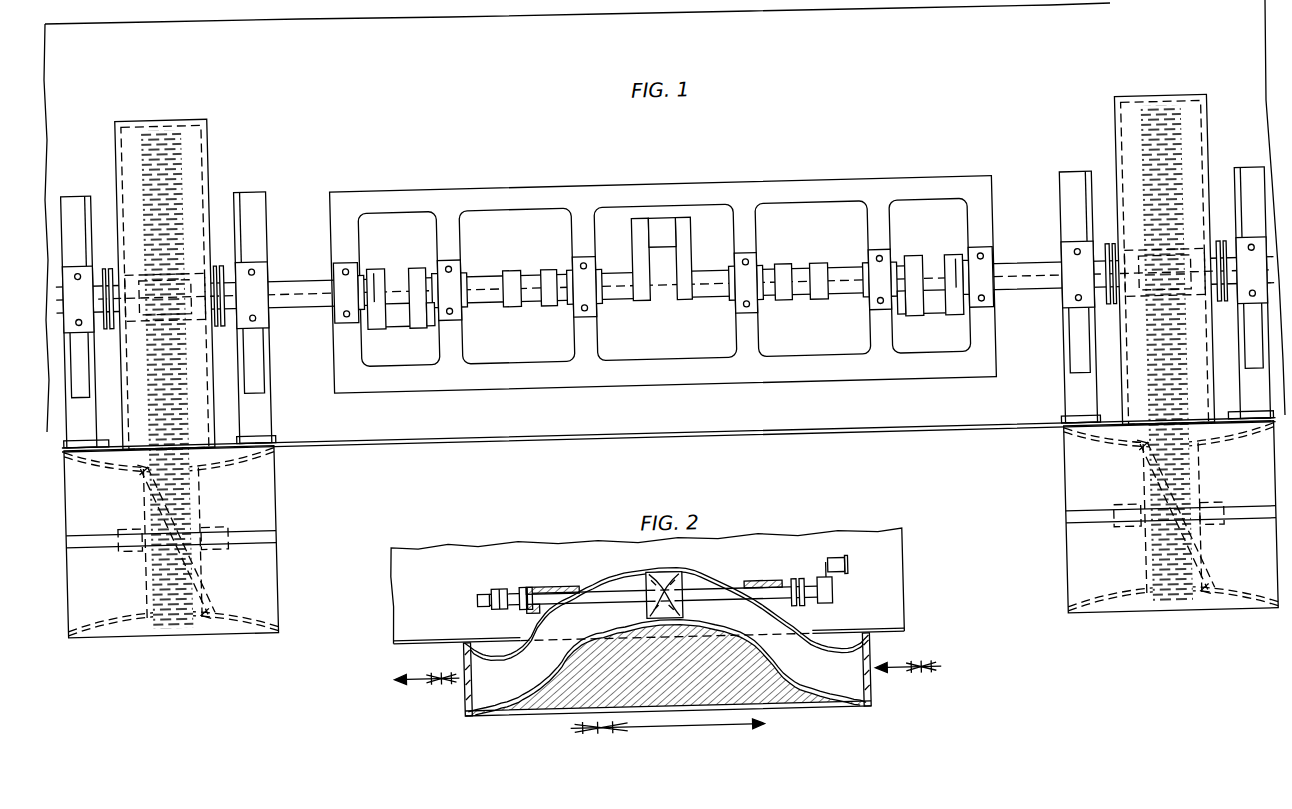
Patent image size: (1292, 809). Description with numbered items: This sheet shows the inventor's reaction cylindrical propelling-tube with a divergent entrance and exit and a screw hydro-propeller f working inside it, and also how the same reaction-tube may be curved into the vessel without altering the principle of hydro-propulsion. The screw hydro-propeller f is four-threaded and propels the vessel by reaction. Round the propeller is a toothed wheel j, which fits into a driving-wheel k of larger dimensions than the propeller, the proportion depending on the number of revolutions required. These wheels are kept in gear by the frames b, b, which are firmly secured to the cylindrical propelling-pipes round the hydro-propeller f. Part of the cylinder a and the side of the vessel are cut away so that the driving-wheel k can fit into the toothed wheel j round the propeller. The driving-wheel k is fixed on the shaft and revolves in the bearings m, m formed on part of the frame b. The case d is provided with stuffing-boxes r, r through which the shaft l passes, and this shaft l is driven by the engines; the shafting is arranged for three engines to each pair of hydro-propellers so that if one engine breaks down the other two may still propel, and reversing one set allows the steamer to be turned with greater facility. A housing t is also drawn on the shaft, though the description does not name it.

The cylinder a is at (671, 527).
The frames b is at (666, 307).
The case d is at (665, 271).
The screw hydro-propeller f is at (676, 529).
The toothed wheel j is at (671, 528).
The driving-wheel k is at (667, 367).
The shaft l is at (665, 285).
The bearings m is at (664, 285).
The stuffing-boxes r is at (665, 277).
The gear housing t is at (663, 284).